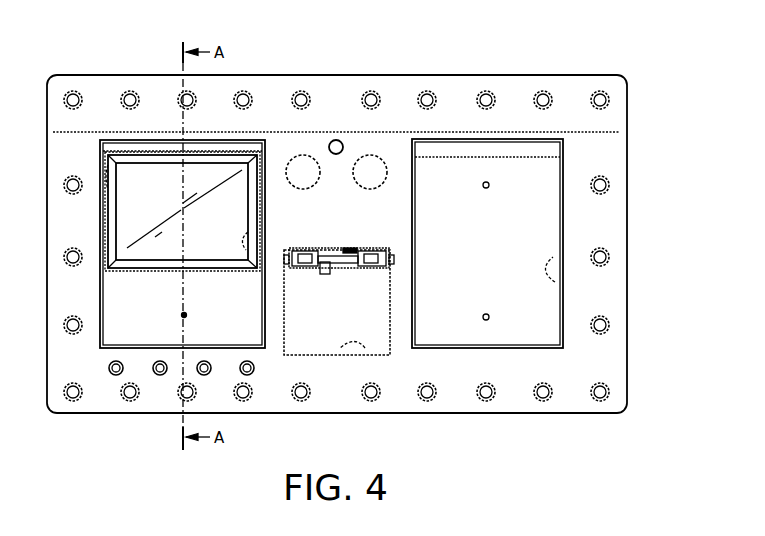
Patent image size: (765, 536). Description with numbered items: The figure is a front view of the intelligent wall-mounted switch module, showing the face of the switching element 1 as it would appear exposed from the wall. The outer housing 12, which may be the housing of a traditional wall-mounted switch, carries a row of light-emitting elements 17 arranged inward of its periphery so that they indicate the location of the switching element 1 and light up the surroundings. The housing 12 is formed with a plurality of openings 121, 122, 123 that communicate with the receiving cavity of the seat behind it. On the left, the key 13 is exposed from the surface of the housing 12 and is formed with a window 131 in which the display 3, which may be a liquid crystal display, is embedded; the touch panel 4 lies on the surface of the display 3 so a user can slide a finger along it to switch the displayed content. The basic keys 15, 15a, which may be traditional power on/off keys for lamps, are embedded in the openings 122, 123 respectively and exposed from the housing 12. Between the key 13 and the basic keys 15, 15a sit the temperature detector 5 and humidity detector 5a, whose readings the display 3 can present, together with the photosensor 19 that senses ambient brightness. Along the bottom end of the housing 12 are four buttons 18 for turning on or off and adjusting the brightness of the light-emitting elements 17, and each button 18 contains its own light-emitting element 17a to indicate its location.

The switching element 1 is at (538, 59).
The display 3 is at (110, 207).
The touch panel 4 is at (128, 222).
The temperature detector 5 is at (303, 156).
The humidity detector 5a is at (370, 156).
The housing 12 is at (595, 215).
The key 13 is at (118, 296).
The basic key 15 is at (537, 205).
The basic key 15a is at (347, 283).
The light-emitting elements 17 is at (550, 398).
The light-emitting element 17a is at (116, 376).
The buttons 18 is at (108, 367).
The photosensor 19 is at (336, 140).
The opening 121 is at (113, 178).
The opening 122 is at (555, 282).
The opening 123 is at (365, 348).
The window 131 is at (242, 238).